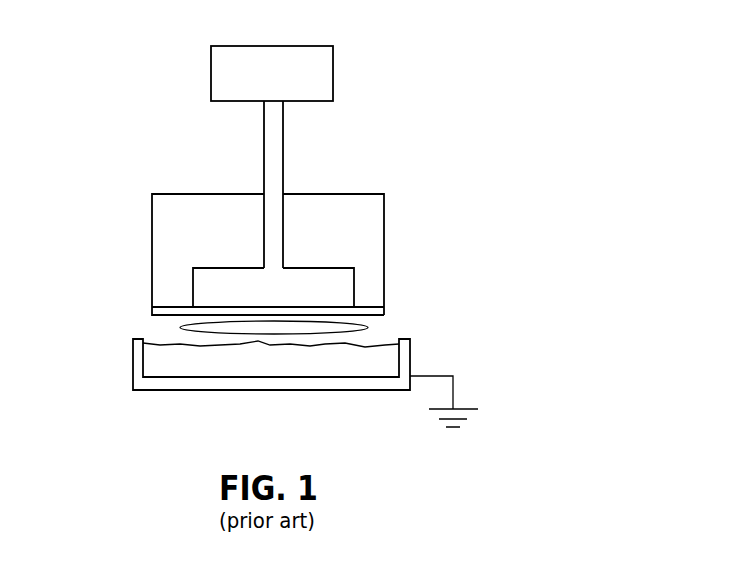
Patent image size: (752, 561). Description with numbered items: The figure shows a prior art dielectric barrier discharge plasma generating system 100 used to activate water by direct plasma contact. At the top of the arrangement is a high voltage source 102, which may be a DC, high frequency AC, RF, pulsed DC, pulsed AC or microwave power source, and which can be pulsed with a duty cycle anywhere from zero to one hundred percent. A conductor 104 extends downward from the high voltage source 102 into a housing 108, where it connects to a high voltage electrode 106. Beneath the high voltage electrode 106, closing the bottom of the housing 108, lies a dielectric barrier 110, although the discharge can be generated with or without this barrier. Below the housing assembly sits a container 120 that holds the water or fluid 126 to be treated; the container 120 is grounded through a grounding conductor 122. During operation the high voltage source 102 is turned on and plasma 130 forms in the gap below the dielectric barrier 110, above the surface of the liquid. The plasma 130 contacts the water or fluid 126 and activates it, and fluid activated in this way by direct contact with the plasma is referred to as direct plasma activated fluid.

The plasma generating system 100 is at (497, 146).
The high voltage source 102 is at (333, 45).
The conductor 104 is at (283, 148).
The high voltage electrode 106 is at (354, 279).
The housing 108 is at (384, 227).
The dielectric barrier 110 is at (152, 308).
The container 120 is at (410, 348).
The grounding conductor 122 is at (453, 395).
The water or fluid 126 is at (265, 356).
The plasma 130 is at (181, 329).